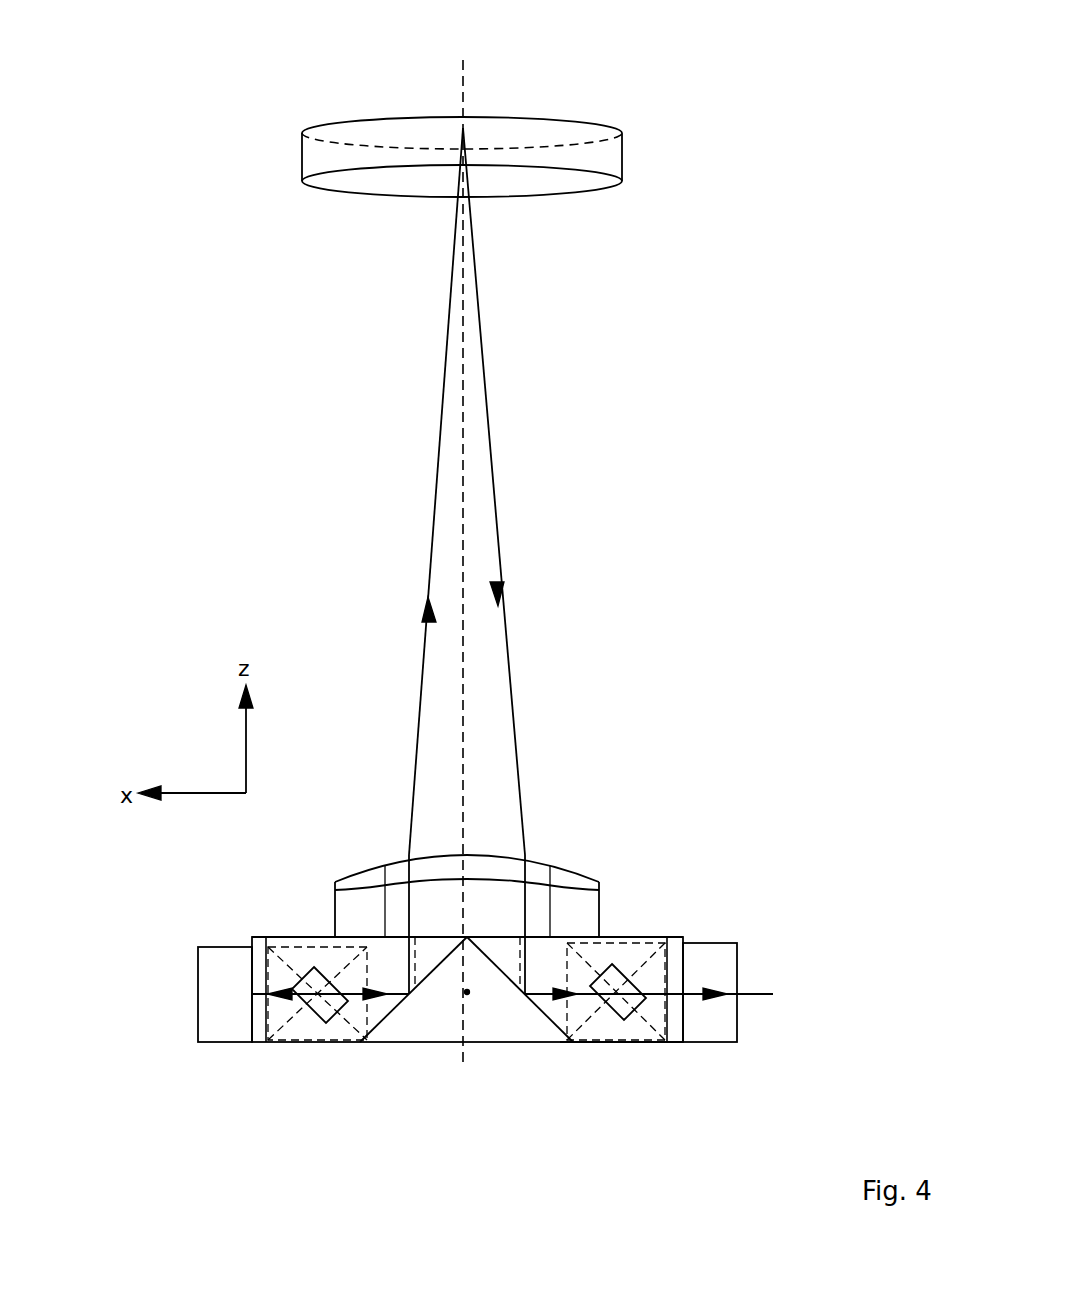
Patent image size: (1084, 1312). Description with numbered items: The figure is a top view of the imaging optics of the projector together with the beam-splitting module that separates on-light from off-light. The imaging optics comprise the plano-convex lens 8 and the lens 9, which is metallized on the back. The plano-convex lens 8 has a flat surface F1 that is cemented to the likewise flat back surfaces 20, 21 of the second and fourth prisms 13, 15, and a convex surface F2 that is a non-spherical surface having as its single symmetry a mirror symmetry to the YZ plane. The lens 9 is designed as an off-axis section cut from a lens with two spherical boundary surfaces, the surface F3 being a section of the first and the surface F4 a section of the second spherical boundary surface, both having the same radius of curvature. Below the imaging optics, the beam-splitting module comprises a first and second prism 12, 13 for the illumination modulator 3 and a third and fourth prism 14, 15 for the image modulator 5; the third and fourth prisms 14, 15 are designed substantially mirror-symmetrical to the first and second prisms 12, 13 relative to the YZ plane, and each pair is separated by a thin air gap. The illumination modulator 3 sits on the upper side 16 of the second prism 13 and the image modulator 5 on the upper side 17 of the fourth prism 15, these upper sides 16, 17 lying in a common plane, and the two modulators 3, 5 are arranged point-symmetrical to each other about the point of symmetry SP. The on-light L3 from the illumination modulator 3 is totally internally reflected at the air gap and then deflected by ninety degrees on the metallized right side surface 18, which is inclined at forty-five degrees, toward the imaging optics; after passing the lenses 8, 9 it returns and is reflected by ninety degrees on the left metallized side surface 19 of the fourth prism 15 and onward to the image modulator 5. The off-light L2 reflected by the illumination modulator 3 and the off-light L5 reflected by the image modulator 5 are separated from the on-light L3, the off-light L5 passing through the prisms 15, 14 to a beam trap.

The lens 9 is at (622, 158).
The surface F4 is at (562, 118).
The surface F3 is at (565, 196).
The on-light L3 is at (432, 498).
The plano-convex lens 8 is at (602, 903).
The convex surface F2 is at (566, 868).
The flat surface F1 is at (588, 937).
The second prism 13 is at (327, 1042).
The back surface 20 is at (293, 938).
The fourth prism 15 is at (662, 1042).
The upper side 17 is at (583, 1042).
The first prism 12 is at (198, 973).
The third prism 14 is at (737, 948).
The upper side 16 is at (370, 960).
The back surface 21 is at (645, 937).
The illumination modulator 3 is at (332, 1020).
The image modulator 5 is at (615, 1020).
The right side surface 18 is at (398, 1005).
The left side surface 19 is at (547, 1010).
The off-light L2 is at (252, 996).
The off-light L5 is at (755, 994).
The point of symmetry SP is at (469, 996).